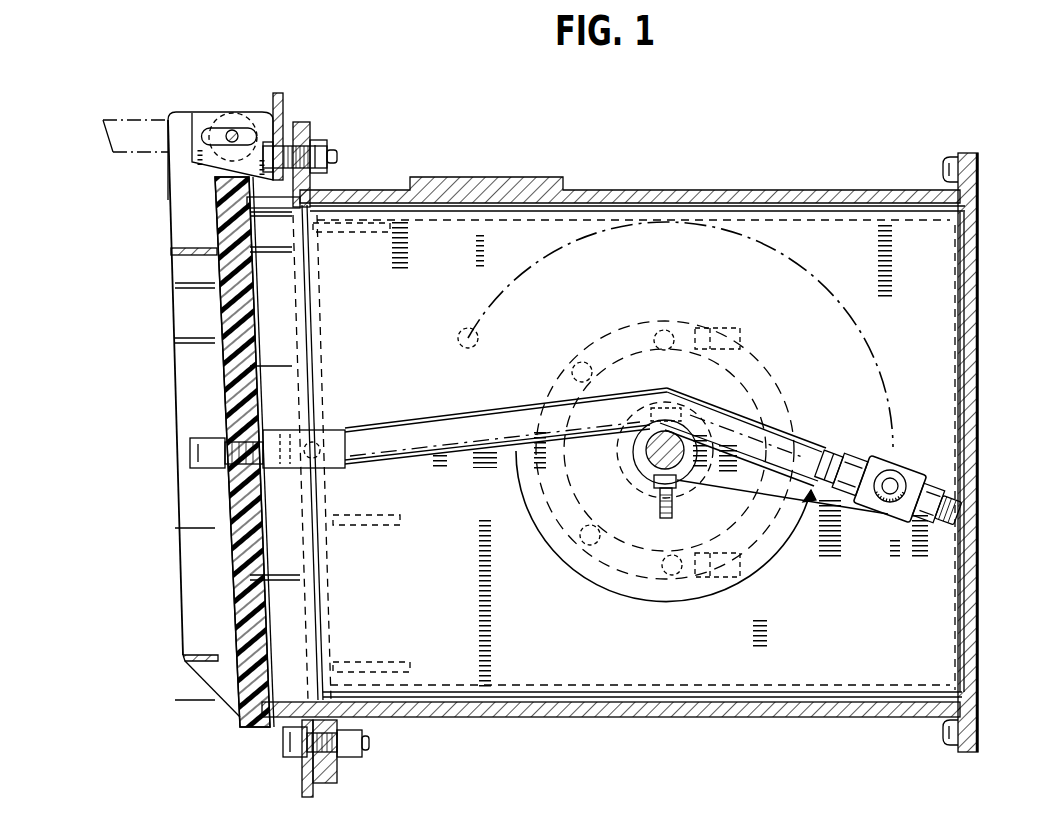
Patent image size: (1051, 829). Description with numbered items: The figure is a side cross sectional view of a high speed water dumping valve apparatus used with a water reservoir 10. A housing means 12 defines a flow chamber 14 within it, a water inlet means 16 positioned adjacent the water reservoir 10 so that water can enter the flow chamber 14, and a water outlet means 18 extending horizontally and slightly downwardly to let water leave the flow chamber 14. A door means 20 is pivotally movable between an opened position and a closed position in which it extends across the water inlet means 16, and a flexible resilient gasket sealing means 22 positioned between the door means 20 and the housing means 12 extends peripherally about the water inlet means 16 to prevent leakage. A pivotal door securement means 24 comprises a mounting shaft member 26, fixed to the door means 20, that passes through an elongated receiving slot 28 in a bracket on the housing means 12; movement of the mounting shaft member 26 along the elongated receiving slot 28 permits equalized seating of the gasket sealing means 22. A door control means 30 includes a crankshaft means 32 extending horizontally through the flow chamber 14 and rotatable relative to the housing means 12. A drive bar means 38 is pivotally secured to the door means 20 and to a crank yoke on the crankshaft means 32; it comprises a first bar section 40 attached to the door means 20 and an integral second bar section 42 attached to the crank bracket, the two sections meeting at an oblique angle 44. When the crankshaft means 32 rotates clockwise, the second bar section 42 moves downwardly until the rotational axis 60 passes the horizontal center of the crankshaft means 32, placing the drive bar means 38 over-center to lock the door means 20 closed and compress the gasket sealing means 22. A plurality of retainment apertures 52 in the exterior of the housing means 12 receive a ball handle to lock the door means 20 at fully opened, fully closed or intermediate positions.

The water reservoir 10 is at (192, 163).
The housing means 12 is at (580, 717).
The flow chamber 14 is at (940, 666).
The water inlet means 16 is at (283, 685).
The water outlet means 18 is at (940, 400).
The door means 20 is at (215, 310).
The gasket sealing means 22 is at (245, 595).
The pivotal door securement means 24 is at (222, 135).
The mounting shaft member 26 is at (232, 130).
The elongated receiving slot 28 is at (255, 128).
The door control means 30 is at (893, 512).
The crankshaft means 32 is at (653, 468).
The drive bar means 38 is at (670, 390).
The first bar section 40 is at (443, 456).
The second bar section 42 is at (783, 437).
The oblique angle 44 is at (560, 555).
The retainment apertures 52 is at (668, 330).
The rotational axis 60 is at (893, 490).